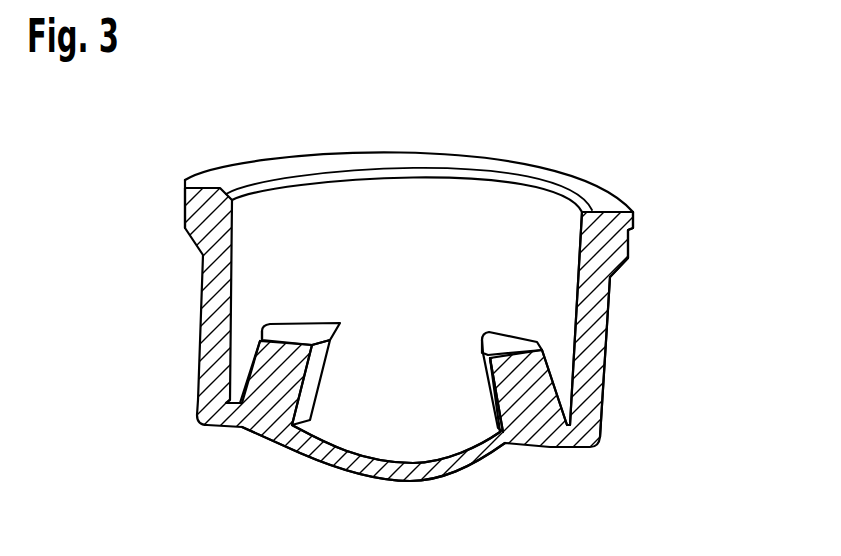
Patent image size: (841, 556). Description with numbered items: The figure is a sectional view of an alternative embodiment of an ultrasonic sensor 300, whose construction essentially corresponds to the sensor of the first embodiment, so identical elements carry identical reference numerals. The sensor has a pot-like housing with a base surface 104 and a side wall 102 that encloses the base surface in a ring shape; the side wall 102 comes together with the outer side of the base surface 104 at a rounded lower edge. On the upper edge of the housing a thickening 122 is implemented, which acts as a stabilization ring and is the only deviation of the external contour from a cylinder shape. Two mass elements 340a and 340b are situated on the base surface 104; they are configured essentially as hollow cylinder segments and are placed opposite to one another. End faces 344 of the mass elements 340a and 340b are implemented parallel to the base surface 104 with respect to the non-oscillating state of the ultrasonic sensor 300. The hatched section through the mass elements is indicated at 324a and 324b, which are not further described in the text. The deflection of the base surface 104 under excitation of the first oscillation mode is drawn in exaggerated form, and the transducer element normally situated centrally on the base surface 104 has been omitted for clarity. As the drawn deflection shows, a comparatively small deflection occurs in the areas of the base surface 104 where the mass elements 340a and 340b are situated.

The ultrasonic sensor 300 is at (630, 132).
The side wall 102 is at (603, 343).
The base surface 104 is at (355, 460).
The thickening 122 is at (203, 218).
The retaining tab surface 324a is at (562, 390).
The retaining tab surface 324b is at (238, 361).
The mass element 340a is at (523, 407).
The mass element 340b is at (266, 397).
The end faces 344 is at (308, 334).